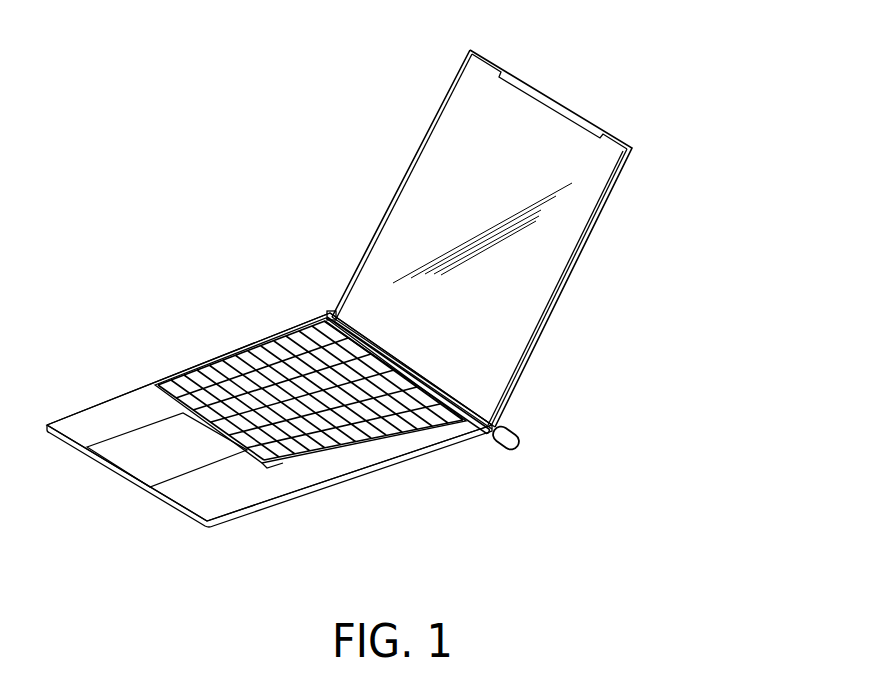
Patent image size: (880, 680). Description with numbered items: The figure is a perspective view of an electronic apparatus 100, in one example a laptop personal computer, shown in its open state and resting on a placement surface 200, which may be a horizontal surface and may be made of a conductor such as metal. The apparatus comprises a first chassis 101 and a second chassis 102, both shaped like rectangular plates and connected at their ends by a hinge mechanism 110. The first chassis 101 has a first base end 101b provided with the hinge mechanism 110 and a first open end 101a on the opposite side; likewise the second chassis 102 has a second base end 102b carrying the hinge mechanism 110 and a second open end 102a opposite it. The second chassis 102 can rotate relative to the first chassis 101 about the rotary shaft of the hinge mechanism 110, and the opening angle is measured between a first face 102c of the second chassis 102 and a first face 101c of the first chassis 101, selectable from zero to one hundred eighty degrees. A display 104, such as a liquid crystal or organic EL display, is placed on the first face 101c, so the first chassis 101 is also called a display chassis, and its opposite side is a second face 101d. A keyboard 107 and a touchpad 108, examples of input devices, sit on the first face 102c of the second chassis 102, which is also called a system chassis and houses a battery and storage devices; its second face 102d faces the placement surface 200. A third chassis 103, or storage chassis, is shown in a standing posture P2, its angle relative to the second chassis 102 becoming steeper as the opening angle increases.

The electronic apparatus 100 is at (657, 103).
The first chassis 101 is at (639, 145).
The first open end 101a is at (533, 84).
The first base end 101b is at (455, 398).
The first face of the first chassis 101c is at (562, 108).
The second face of the first chassis 101d is at (588, 254).
The second chassis 102 is at (130, 393).
The second open end 102a is at (170, 507).
The second base end 102b is at (365, 342).
The first face of the second chassis 102c is at (88, 420).
The second face of the second chassis 102d is at (275, 505).
The third chassis 103 is at (512, 424).
The display 104 is at (457, 155).
The keyboard 107 is at (210, 377).
The touchpad 108 is at (140, 460).
The hinge mechanism 110 is at (407, 363).
The placement surface 200 is at (487, 488).
The standing posture P2 is at (531, 442).